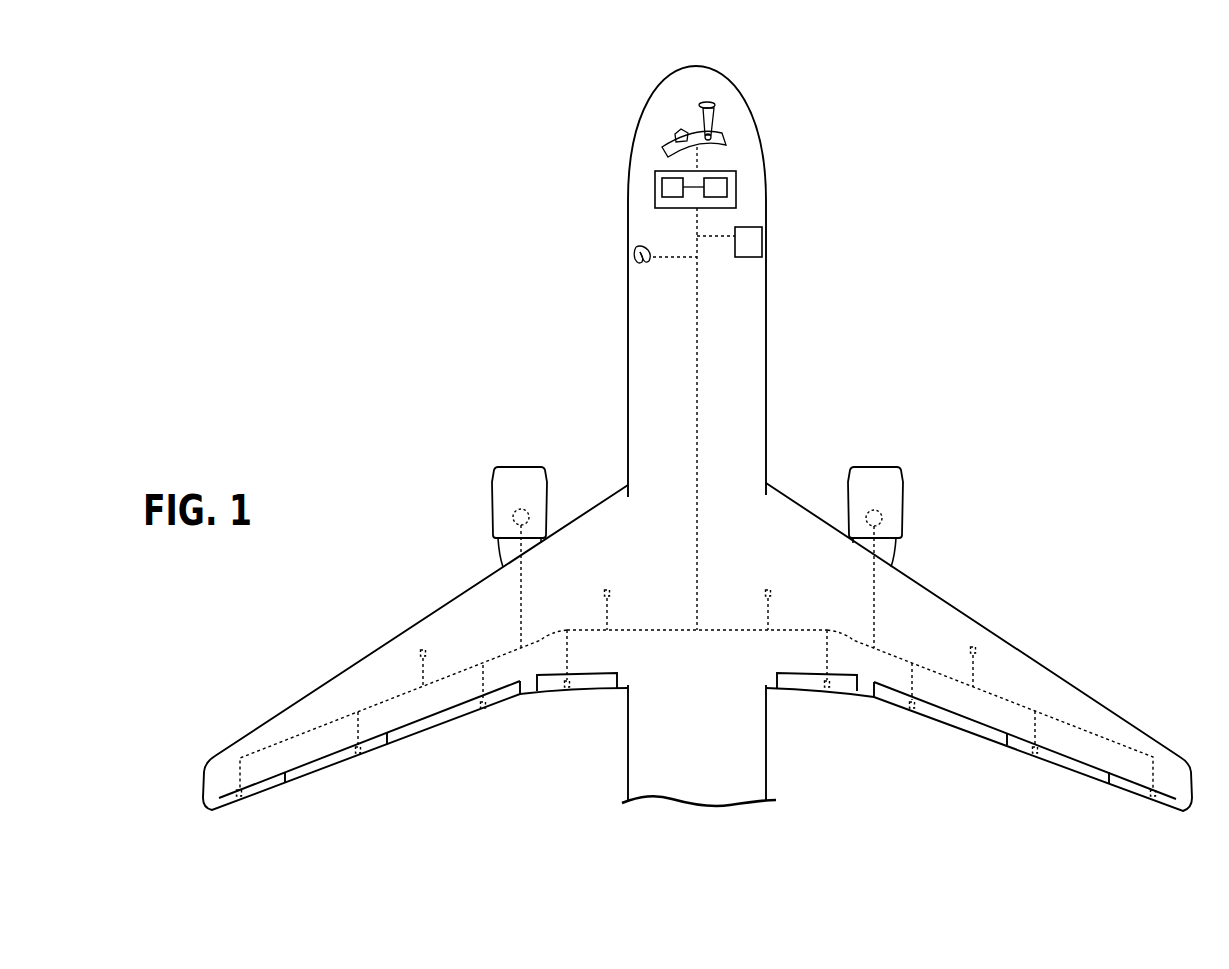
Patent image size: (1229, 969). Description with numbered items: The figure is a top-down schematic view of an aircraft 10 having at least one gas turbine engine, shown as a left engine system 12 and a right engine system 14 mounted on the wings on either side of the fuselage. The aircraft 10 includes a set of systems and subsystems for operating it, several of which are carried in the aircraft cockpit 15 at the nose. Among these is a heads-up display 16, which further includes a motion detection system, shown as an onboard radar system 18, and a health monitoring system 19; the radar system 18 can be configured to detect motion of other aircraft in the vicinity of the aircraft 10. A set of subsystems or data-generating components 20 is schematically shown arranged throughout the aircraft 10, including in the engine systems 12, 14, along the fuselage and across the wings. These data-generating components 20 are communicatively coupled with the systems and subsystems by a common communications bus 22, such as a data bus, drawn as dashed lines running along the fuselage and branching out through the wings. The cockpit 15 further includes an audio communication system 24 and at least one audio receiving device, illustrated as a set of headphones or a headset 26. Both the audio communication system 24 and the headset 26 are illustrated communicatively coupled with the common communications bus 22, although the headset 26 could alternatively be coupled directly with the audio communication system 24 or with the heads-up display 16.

The aircraft 10 is at (517, 93).
The left engine system 12 is at (520, 468).
The right engine system 14 is at (888, 470).
The aircraft cockpit 15 is at (797, 109).
The heads-up display 16 is at (737, 188).
The onboard radar system 18 is at (658, 204).
The health monitoring system 19 is at (718, 198).
The data-generating components 20 is at (530, 510).
The common communications bus 22 is at (690, 362).
The audio communication system 24 is at (750, 257).
The headset 26 is at (634, 258).